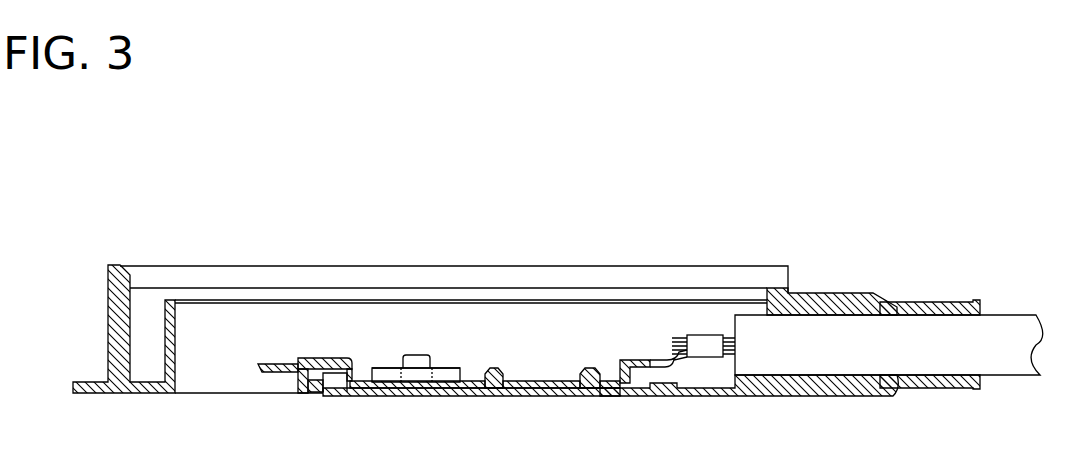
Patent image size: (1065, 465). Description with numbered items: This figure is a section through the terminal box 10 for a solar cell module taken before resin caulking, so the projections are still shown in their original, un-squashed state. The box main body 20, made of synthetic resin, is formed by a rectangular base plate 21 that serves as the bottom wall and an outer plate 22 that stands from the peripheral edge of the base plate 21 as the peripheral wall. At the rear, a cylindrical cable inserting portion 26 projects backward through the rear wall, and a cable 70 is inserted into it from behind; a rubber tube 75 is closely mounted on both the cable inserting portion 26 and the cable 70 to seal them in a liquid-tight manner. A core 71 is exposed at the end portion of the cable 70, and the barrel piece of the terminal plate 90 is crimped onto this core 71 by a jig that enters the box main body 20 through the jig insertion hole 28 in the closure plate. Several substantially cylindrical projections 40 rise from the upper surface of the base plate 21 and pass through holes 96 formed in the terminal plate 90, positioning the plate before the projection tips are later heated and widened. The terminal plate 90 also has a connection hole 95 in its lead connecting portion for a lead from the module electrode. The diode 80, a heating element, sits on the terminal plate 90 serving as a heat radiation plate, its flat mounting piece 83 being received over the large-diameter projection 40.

The terminal box 10 is at (583, 204).
The box main body 20 is at (152, 266).
The base plate 21 is at (540, 397).
The outer plate 22 is at (214, 266).
The cable inserting portion 26 is at (842, 308).
The jig insertion hole 28 is at (717, 392).
The projection 40 is at (417, 357).
The cable 70 is at (1012, 320).
The core 71 is at (683, 333).
The rubber tube 75 is at (948, 307).
The diode 80 is at (397, 368).
The mounting piece 83 is at (385, 373).
The terminal plate 90 is at (277, 362).
The connection hole 95 is at (308, 392).
The hole 96 is at (493, 392).